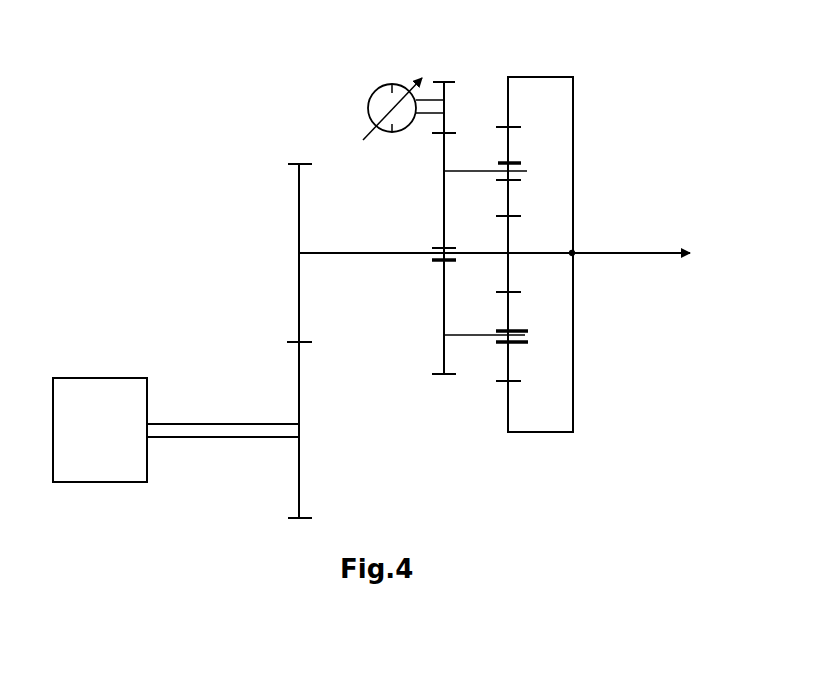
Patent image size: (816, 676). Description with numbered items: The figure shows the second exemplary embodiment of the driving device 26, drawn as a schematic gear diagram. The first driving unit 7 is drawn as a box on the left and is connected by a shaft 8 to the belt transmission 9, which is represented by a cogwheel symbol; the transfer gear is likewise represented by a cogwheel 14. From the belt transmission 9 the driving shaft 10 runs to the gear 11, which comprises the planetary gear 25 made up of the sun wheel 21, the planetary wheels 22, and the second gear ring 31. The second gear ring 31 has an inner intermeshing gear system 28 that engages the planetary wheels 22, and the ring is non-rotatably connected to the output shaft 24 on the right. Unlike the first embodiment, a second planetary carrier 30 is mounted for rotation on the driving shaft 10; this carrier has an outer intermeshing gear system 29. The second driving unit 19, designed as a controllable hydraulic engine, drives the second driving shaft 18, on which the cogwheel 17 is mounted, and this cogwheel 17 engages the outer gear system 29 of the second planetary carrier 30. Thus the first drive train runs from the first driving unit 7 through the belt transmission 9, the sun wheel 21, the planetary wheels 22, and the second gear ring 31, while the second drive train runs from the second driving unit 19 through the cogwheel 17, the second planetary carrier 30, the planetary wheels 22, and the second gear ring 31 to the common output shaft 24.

The first driving unit 7 is at (100, 468).
The input shaft with speed n1 8 is at (218, 423).
The belt transmission 9 is at (280, 251).
The driving shaft 10 is at (338, 251).
The gear 11 is at (580, 497).
The cogwheel 14 is at (297, 487).
The cogwheel 17 is at (446, 97).
The second driving shaft 18 is at (427, 97).
The second driving unit 19 is at (385, 83).
The sun wheel 21 is at (510, 277).
The planetary wheels 22 is at (527, 165).
The output shaft 24 is at (657, 257).
The planetary gear 25 is at (622, 435).
The driving device 26 is at (135, 152).
The inner intermeshing gear system 28 is at (502, 382).
The outer intermeshing gear system 29 is at (437, 382).
The second planetary carrier 30 is at (442, 324).
The second gear ring 31 is at (573, 188).